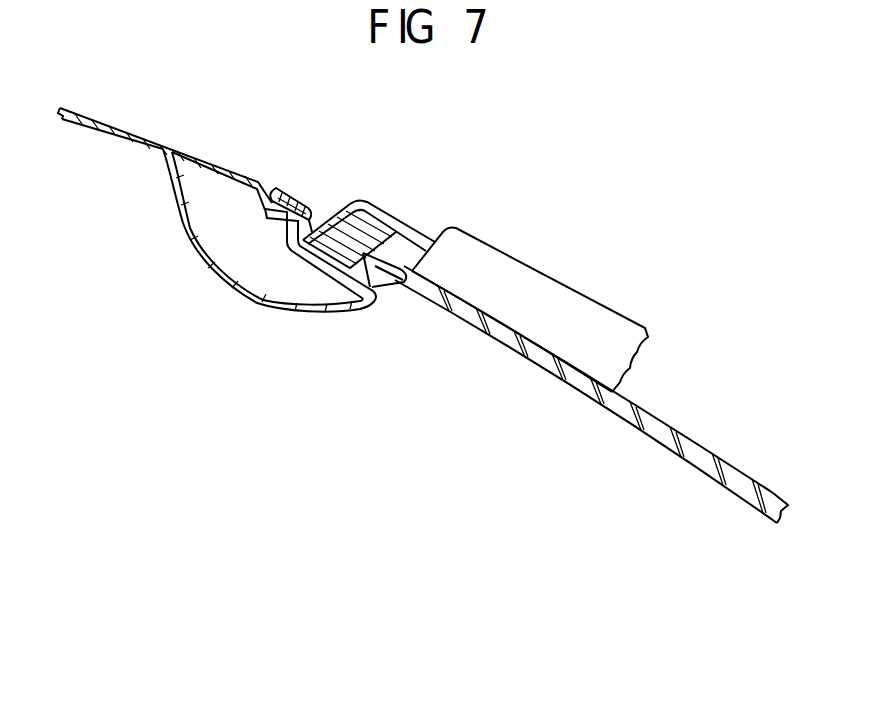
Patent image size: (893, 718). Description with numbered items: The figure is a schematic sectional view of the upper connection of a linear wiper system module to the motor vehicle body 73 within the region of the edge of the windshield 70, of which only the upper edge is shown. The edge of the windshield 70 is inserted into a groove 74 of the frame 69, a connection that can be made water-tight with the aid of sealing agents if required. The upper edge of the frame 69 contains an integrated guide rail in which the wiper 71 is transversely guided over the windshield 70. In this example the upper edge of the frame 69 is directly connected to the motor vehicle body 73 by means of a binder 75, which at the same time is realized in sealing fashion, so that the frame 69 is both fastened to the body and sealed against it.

The frame 69 is at (328, 228).
The windshield 70 is at (665, 433).
The wiper 71 is at (567, 303).
The motor vehicle body 73 is at (220, 163).
The groove 74 is at (388, 268).
The binder 75 is at (278, 218).